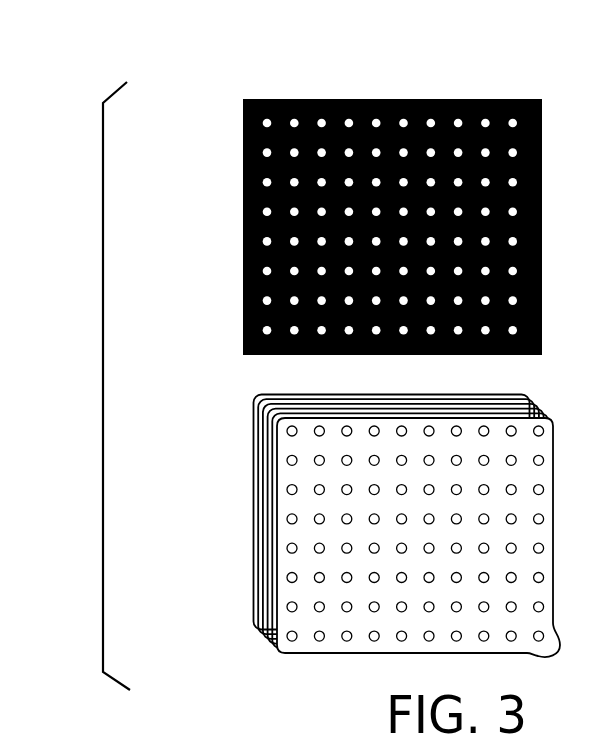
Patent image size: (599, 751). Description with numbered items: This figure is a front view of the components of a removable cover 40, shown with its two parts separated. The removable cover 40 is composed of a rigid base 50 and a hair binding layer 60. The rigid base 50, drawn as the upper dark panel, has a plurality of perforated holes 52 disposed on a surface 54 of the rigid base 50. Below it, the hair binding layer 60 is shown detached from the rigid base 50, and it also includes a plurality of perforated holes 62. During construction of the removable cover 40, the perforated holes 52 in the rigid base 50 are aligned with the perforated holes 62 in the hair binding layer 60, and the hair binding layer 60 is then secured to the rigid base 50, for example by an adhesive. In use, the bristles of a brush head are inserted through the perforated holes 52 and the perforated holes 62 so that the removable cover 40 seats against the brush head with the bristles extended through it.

The removable cover 40 is at (70, 123).
The rigid base 50 is at (363, 113).
The perforated holes 52 is at (463, 120).
The surface 54 is at (415, 137).
The hair binding layer 60 is at (288, 596).
The perforated holes 62 is at (343, 641).